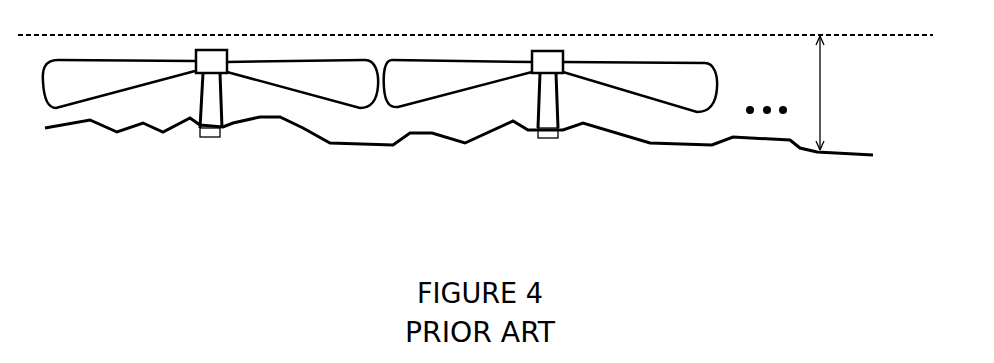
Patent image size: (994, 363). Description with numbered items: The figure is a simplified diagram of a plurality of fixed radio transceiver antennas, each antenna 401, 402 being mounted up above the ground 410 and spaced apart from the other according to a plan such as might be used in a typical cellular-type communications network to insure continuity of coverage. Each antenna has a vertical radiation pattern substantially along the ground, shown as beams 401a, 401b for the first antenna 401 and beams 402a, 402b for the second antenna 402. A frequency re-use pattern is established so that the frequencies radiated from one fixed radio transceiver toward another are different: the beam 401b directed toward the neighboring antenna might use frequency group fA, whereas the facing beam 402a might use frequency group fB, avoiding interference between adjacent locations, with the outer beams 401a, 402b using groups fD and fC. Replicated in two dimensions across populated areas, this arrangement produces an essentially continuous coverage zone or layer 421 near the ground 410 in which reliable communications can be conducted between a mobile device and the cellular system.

The fixed radio transceiver antenna 401 is at (193, 75).
The fixed radio transceiver antenna 402 is at (530, 78).
The vertical radiation pattern 401a is at (69, 99).
The vertical radiation pattern 401b is at (330, 89).
The vertical radiation pattern 402a is at (423, 92).
The vertical radiation pattern 402b is at (667, 92).
The ground 410 is at (712, 145).
The coverage zone or layer 421 is at (836, 93).